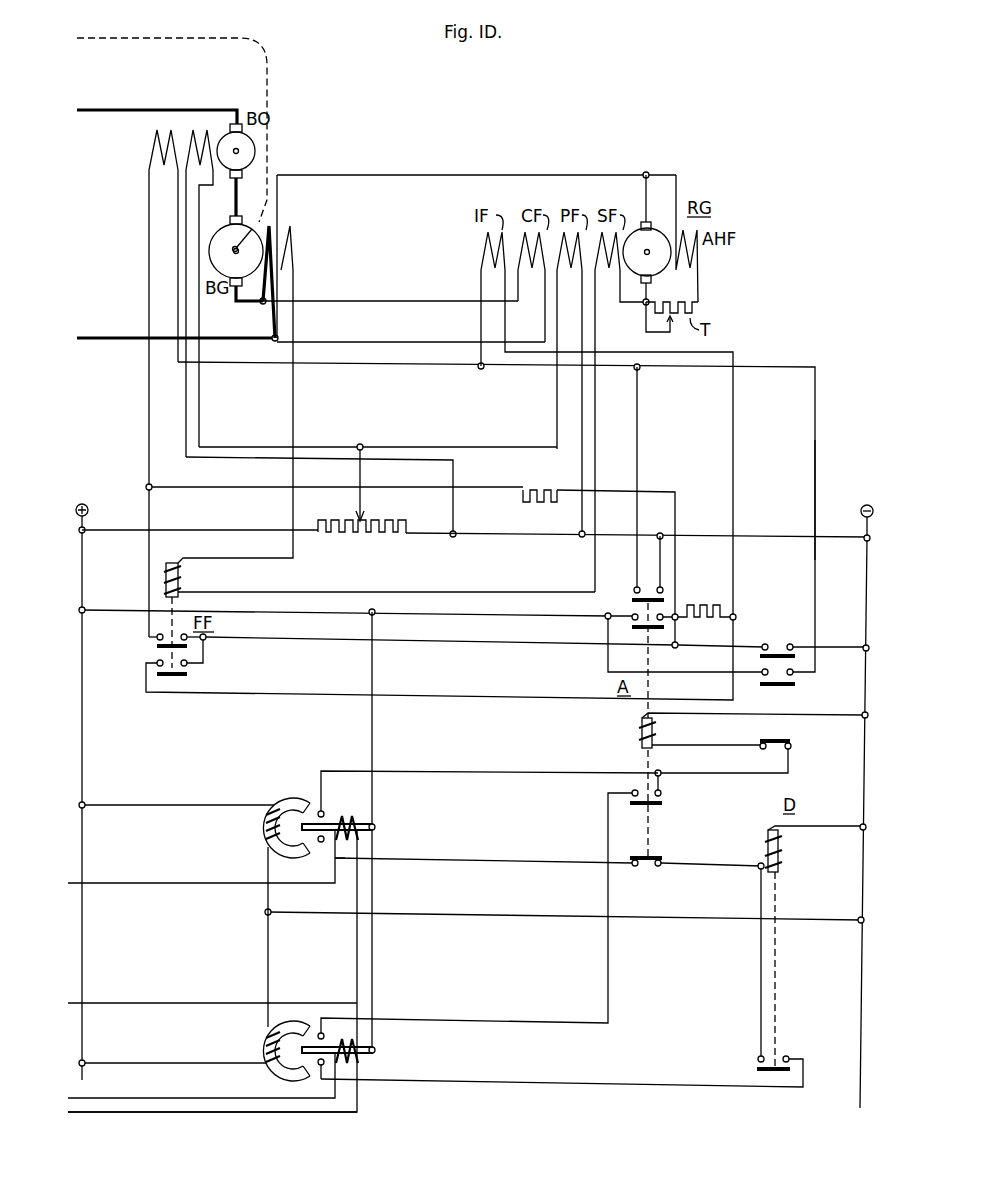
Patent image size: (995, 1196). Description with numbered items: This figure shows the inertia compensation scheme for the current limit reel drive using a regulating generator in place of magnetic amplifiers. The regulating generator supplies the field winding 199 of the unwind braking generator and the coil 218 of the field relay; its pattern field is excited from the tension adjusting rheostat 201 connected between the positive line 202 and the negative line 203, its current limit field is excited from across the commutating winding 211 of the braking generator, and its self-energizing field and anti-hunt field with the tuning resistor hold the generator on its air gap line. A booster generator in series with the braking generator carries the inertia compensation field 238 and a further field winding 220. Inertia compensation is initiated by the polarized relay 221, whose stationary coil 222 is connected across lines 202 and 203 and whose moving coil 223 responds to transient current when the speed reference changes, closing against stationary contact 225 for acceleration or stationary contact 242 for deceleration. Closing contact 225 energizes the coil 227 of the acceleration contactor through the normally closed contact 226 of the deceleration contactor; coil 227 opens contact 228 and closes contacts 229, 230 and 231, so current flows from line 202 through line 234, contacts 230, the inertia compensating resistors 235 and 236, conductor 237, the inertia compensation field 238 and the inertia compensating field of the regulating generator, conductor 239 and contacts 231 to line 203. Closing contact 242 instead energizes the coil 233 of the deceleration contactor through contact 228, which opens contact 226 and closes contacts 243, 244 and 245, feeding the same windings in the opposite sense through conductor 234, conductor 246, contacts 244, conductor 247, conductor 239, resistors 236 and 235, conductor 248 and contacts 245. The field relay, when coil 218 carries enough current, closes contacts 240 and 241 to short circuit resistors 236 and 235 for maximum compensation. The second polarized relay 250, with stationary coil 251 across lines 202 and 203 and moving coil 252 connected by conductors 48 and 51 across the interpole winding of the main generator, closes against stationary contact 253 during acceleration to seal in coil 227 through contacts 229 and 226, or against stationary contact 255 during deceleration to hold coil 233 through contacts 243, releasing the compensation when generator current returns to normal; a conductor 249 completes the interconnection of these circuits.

The inertia compensation field 238 is at (152, 141).
The resistor 220 is at (208, 130).
The commutating winding 211 is at (274, 228).
The field winding 199 is at (292, 241).
The conductor 239 is at (441, 366).
The conductor 249 is at (640, 462).
The conductor 247 is at (817, 507).
The potentiometer 201 is at (374, 521).
The positive line 202 is at (84, 553).
The negative line 203 is at (866, 563).
The conductor 237 is at (512, 493).
The inertia compensating resistor 236 is at (557, 503).
The conductor 248 is at (626, 494).
The coil of the field relay 218 is at (180, 578).
The line 234 is at (512, 615).
The contacts 240 is at (155, 641).
The contacts 241 is at (190, 667).
The contacts 231 is at (634, 598).
The contacts 230 is at (632, 615).
The inertia compensating resistor 235 is at (703, 606).
The contacts 245 is at (779, 647).
The conductor 246 is at (722, 672).
The contacts 244 is at (793, 683).
The coil of the acceleration contactor 227 is at (640, 720).
The normally closed contact 226 is at (790, 745).
The contacts 229 is at (662, 796).
The contact 228 is at (660, 860).
The coil of the deceleration contactor 233 is at (781, 857).
The contacts 243 is at (782, 1044).
The polarized relay 221 is at (299, 790).
The stationary coil 222 is at (268, 834).
The moving coil 223 is at (362, 808).
The stationary contact 225 is at (323, 811).
The stationary contact 242 is at (319, 843).
The polarized relay 250 is at (309, 998).
The stationary coil 251 is at (268, 1048).
The moving coil 252 is at (358, 1031).
The stationary contact 253 is at (320, 1033).
The stationary contact 255 is at (320, 1066).
The conductor 48 is at (123, 1097).
The conductor 51 is at (172, 1111).